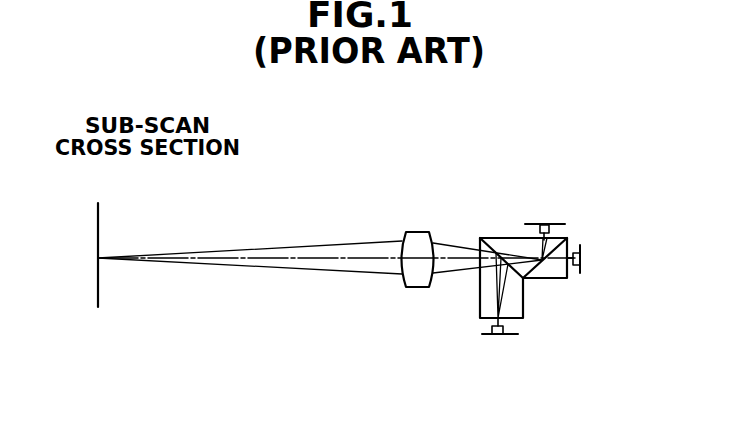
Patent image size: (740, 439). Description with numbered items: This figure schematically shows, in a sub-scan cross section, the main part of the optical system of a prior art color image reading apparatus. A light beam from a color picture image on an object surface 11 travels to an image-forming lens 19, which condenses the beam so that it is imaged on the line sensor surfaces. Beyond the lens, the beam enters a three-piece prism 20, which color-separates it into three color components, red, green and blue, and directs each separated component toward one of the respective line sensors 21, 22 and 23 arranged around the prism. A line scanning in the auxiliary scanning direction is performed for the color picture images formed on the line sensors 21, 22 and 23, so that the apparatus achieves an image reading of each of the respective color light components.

The object surface 11 is at (98, 220).
The image-forming lens 19 is at (413, 235).
The three-piece prism 20 is at (516, 300).
The line sensor 21 is at (553, 222).
The line sensor 22 is at (581, 268).
The line sensor 23 is at (510, 338).